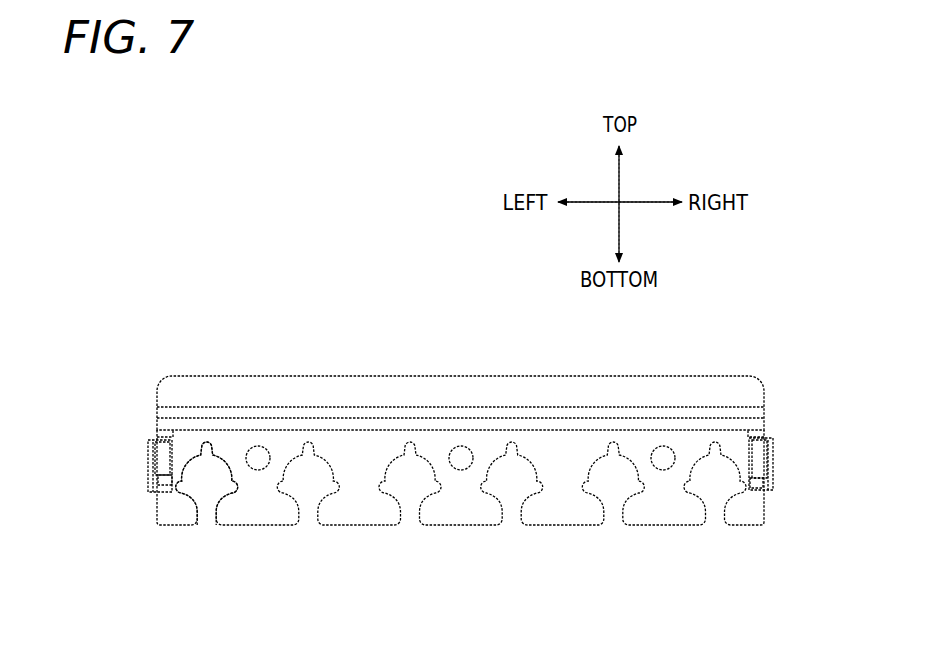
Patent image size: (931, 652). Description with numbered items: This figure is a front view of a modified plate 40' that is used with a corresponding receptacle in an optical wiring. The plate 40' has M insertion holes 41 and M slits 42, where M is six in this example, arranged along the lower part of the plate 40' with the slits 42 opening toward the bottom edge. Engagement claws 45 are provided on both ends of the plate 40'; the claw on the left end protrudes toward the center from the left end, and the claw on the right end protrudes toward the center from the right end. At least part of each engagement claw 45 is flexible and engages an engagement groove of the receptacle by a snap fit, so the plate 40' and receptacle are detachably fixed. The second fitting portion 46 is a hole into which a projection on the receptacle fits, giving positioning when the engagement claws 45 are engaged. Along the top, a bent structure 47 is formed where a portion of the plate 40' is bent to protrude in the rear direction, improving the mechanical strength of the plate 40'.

The plate 40' is at (458, 436).
The insertion hole 41 is at (192, 492).
The slit 42 is at (207, 529).
The engagement claw 45 is at (147, 462).
The second fitting portion 46 is at (258, 450).
The bent structure 47 is at (149, 406).